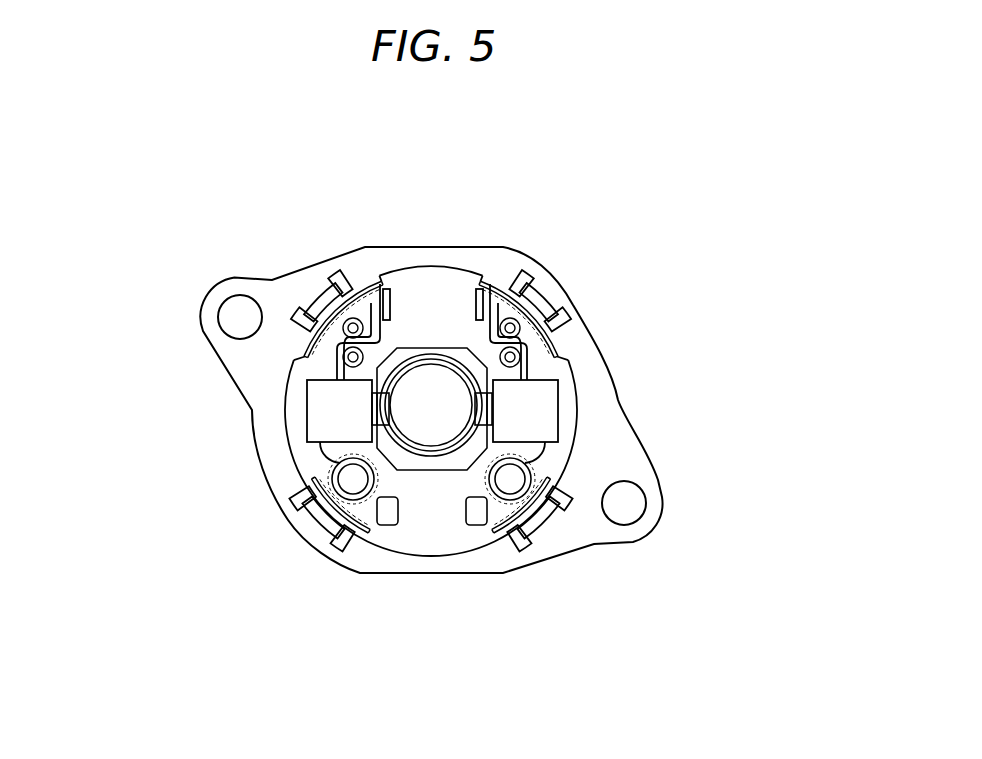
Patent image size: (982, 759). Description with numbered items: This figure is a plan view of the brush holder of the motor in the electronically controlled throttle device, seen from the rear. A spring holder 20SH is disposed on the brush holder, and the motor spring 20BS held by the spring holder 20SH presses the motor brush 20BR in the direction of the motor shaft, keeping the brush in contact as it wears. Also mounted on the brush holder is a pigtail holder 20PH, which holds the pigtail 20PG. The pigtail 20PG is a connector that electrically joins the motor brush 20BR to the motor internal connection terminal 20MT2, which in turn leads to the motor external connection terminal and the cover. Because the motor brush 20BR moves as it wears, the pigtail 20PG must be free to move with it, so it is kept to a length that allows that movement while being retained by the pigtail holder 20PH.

The pigtail holder 20PH is at (353, 330).
The pigtail 20PG is at (305, 358).
The motor brush 20BR is at (372, 408).
The motor spring 20BS is at (347, 477).
The spring holder 20SH is at (300, 503).
The motor internal connection terminal 20MT2 is at (388, 288).